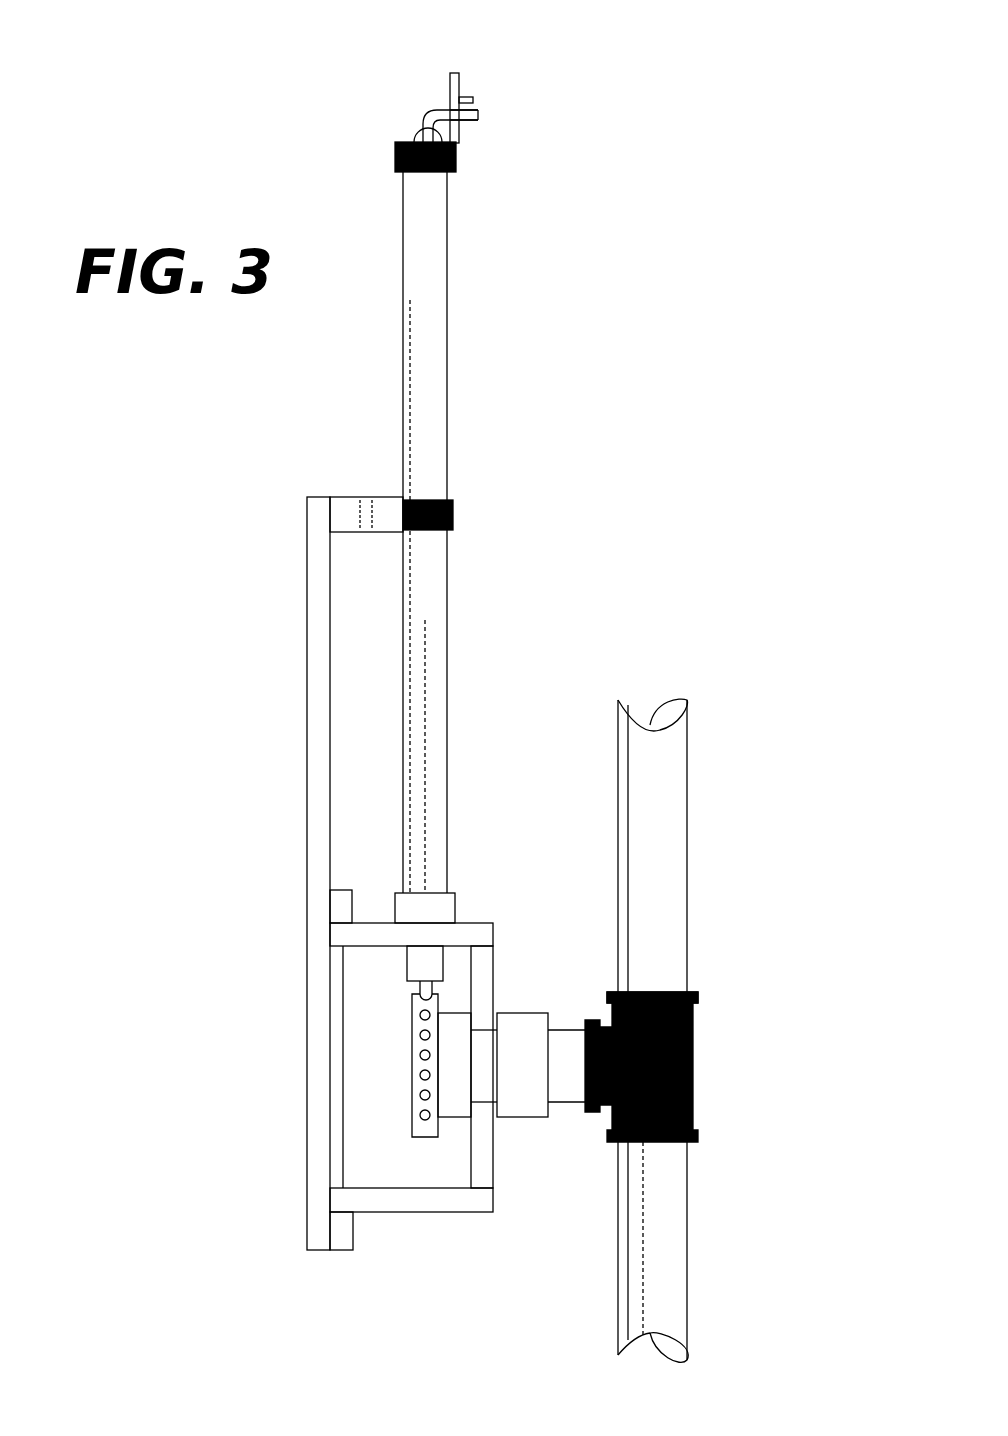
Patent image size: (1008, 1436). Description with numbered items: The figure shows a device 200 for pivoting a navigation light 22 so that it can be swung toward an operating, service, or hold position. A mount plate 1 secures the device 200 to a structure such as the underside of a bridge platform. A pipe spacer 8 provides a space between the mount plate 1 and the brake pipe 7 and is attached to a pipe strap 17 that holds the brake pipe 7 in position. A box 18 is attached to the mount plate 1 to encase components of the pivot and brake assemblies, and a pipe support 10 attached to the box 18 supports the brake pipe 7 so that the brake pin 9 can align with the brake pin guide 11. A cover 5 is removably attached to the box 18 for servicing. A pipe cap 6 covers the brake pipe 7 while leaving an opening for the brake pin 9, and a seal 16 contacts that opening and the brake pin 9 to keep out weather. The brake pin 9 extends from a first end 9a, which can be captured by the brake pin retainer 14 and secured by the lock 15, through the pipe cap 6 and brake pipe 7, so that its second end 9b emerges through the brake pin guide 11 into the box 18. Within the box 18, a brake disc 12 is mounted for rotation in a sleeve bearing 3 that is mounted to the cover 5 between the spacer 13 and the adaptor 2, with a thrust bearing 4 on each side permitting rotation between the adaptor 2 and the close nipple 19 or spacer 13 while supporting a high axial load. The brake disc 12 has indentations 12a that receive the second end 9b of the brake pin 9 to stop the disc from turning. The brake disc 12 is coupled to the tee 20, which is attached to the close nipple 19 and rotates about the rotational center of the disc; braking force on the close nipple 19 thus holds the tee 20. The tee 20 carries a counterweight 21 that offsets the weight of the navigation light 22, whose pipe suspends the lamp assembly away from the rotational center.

The mount plate 1 is at (310, 665).
The adaptor 2 is at (517, 1107).
The sleeve bearing 3 is at (483, 1103).
The thrust bearing 4 is at (472, 1030).
The cover 5 is at (493, 923).
The pipe cap 6 is at (395, 156).
The brake pipe 7 is at (433, 347).
The pipe spacer 8 is at (369, 497).
The brake pin 9 is at (478, 115).
The first end 9a is at (464, 115).
The second end 9b is at (420, 988).
The pipe support 10 is at (455, 895).
The brake pin guide 11 is at (407, 970).
The brake disc 12 is at (430, 1135).
The indentations 12a is at (420, 1106).
The spacer 13 is at (460, 1112).
The brake pin retainer 14 is at (449, 75).
The lock 15 is at (462, 97).
The seal 16 is at (414, 136).
The pipe strap 17 is at (453, 518).
The box 18 is at (372, 928).
The close nipple 19 is at (698, 1082).
The tee 20 is at (698, 1027).
The counterweight 21 is at (647, 853).
The navigation light 22 is at (668, 1203).
The device 200 is at (690, 225).